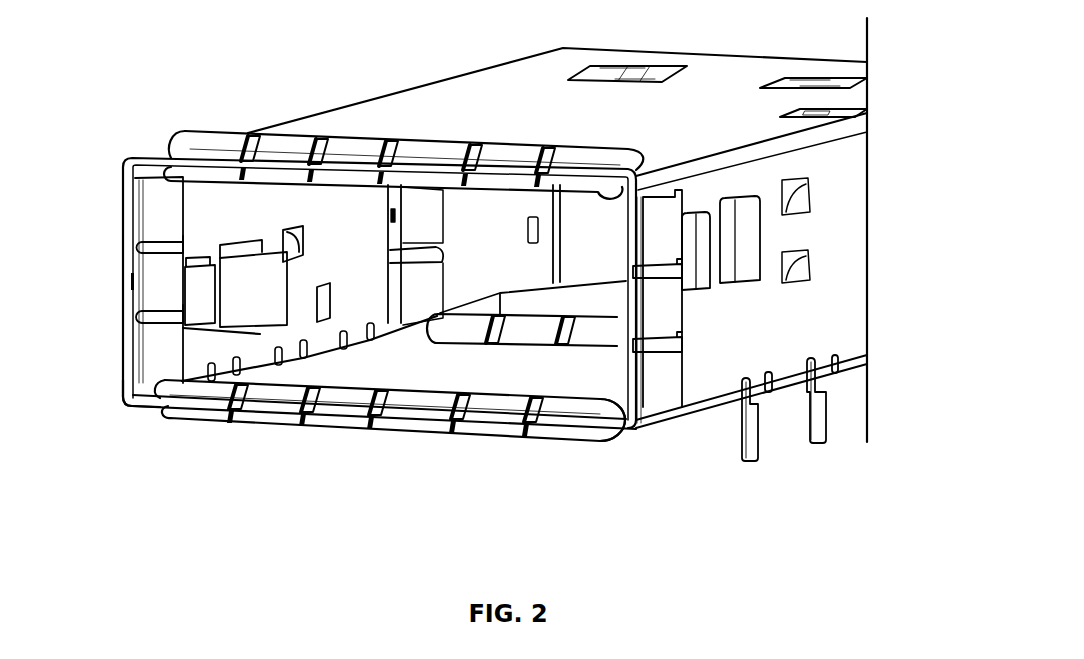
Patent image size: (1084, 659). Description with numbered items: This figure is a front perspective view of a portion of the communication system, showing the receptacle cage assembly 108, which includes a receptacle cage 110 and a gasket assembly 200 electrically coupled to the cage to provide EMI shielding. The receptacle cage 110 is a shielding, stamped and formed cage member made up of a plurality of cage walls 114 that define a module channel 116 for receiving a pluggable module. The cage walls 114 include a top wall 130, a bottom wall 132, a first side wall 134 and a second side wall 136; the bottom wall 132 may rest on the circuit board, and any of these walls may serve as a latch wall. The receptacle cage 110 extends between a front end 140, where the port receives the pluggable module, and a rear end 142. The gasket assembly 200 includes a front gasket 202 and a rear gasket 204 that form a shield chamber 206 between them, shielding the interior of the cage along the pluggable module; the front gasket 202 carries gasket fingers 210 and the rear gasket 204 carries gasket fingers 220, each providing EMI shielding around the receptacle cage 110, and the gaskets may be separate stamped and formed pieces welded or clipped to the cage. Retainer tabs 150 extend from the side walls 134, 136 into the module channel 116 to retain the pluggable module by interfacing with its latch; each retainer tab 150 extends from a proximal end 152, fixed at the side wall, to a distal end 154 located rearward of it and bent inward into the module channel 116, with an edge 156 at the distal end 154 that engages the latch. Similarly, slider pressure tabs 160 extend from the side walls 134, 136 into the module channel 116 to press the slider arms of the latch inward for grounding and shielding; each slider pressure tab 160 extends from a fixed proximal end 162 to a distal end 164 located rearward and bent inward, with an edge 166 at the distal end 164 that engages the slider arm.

The receptacle cage assembly 108 is at (860, 415).
The receptacle cage 110 is at (843, 202).
The cage walls 114 is at (720, 60).
The module channel 116 is at (300, 360).
The top wall 130 is at (592, 118).
The bottom wall 132 is at (517, 385).
The first side wall 134 is at (838, 310).
The second side wall 136 is at (210, 200).
The front end 140 is at (132, 410).
The rear end 142 is at (808, 52).
The retainer tabs 150 is at (252, 300).
The proximal end 152 is at (232, 322).
The distal end 154 is at (268, 310).
The edge 156 is at (305, 292).
The slider pressure tabs 160 is at (212, 283).
The proximal end 162 is at (215, 307).
The distal end 164 is at (240, 330).
The edge 166 is at (226, 268).
The gasket assembly 200 is at (398, 440).
The front gasket 202 is at (385, 364).
The rear gasket 204 is at (590, 345).
The shield chamber 206 is at (366, 342).
The gasket fingers 210 is at (450, 393).
The gasket fingers 220 is at (422, 213).